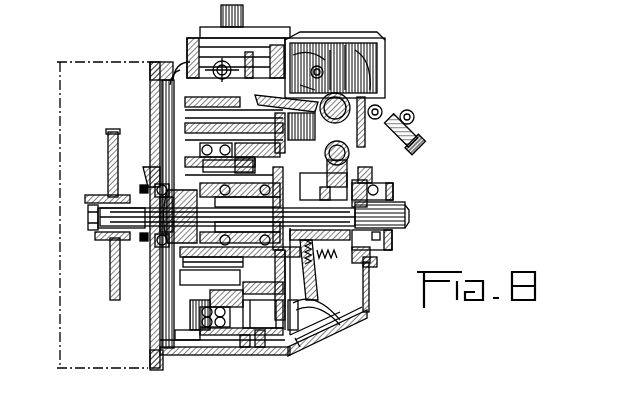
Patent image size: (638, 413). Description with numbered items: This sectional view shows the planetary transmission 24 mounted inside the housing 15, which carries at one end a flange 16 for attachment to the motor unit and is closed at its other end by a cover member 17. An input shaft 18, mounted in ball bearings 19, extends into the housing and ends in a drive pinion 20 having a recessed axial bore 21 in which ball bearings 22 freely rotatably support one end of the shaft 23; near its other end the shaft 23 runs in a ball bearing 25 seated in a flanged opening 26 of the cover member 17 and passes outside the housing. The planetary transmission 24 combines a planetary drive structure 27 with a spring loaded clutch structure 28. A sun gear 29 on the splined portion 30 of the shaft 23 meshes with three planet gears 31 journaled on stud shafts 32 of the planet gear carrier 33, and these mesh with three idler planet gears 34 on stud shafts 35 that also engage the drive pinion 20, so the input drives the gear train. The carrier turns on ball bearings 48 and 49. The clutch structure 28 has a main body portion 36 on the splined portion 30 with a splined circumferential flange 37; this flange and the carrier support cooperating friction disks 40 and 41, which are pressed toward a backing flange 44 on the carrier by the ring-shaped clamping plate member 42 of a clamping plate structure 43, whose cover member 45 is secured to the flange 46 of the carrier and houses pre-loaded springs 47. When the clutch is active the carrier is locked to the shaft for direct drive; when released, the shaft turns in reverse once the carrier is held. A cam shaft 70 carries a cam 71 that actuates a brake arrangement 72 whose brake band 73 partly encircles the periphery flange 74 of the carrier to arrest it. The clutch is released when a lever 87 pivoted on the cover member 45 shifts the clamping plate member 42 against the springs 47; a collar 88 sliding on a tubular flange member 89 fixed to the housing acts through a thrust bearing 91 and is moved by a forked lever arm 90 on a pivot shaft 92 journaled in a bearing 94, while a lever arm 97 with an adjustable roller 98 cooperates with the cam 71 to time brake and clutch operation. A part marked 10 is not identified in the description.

The housing 10 is at (373, 319).
The housing 15 is at (213, 343).
The flange 16 is at (148, 68).
The cover member 17 is at (377, 87).
The input shaft 18 is at (87, 204).
The ball bearings 19 is at (140, 188).
The drive pinion 20 is at (150, 193).
The recessed axial bore 21 is at (107, 255).
The ball bearings 22 is at (143, 240).
The shaft 23 is at (408, 216).
The planetary transmission 24 is at (190, 178).
The ball bearing 25 is at (377, 256).
The flanged opening 26 is at (395, 190).
The planetary drive structure 27 is at (190, 305).
The spring loaded clutch structure 28 is at (315, 301).
The sun gear 29 is at (148, 172).
The splined portion 30 is at (116, 282).
The planet gears 31 is at (225, 135).
The stud shafts 32 is at (235, 150).
The planet gear carrier 33 is at (215, 112).
The idler planet gears 34 is at (180, 257).
The stud shafts 35 is at (187, 263).
The main body portion 36 is at (263, 347).
The splined circumferential flange 37 is at (247, 347).
The friction disks 40 is at (228, 95).
The friction disks 41 is at (245, 45).
The clamping plate member 42 is at (313, 77).
The clamping plate structure 43 is at (290, 77).
The backing flange 44 is at (203, 70).
The cover member 45 is at (414, 116).
The flange 46 is at (230, 60).
The pre-loaded springs 47 is at (343, 87).
The ball bearing 48 is at (187, 280).
The ball bearing 49 is at (300, 333).
The cam shaft 70 is at (363, 77).
The cam 71 is at (375, 58).
The brake arrangement 72 is at (207, 340).
The brake band 73 is at (147, 370).
The periphery flange 74 is at (173, 70).
The lever 87 is at (323, 314).
The collar 88 is at (323, 277).
The tubular flange member 89 is at (370, 267).
The forked lever arm 90 is at (372, 175).
The thrust bearing 91 is at (297, 187).
The pivot shaft 92 is at (420, 145).
The bearing 94 is at (337, 77).
The lever arm 97 is at (416, 130).
The roller 98 is at (380, 103).